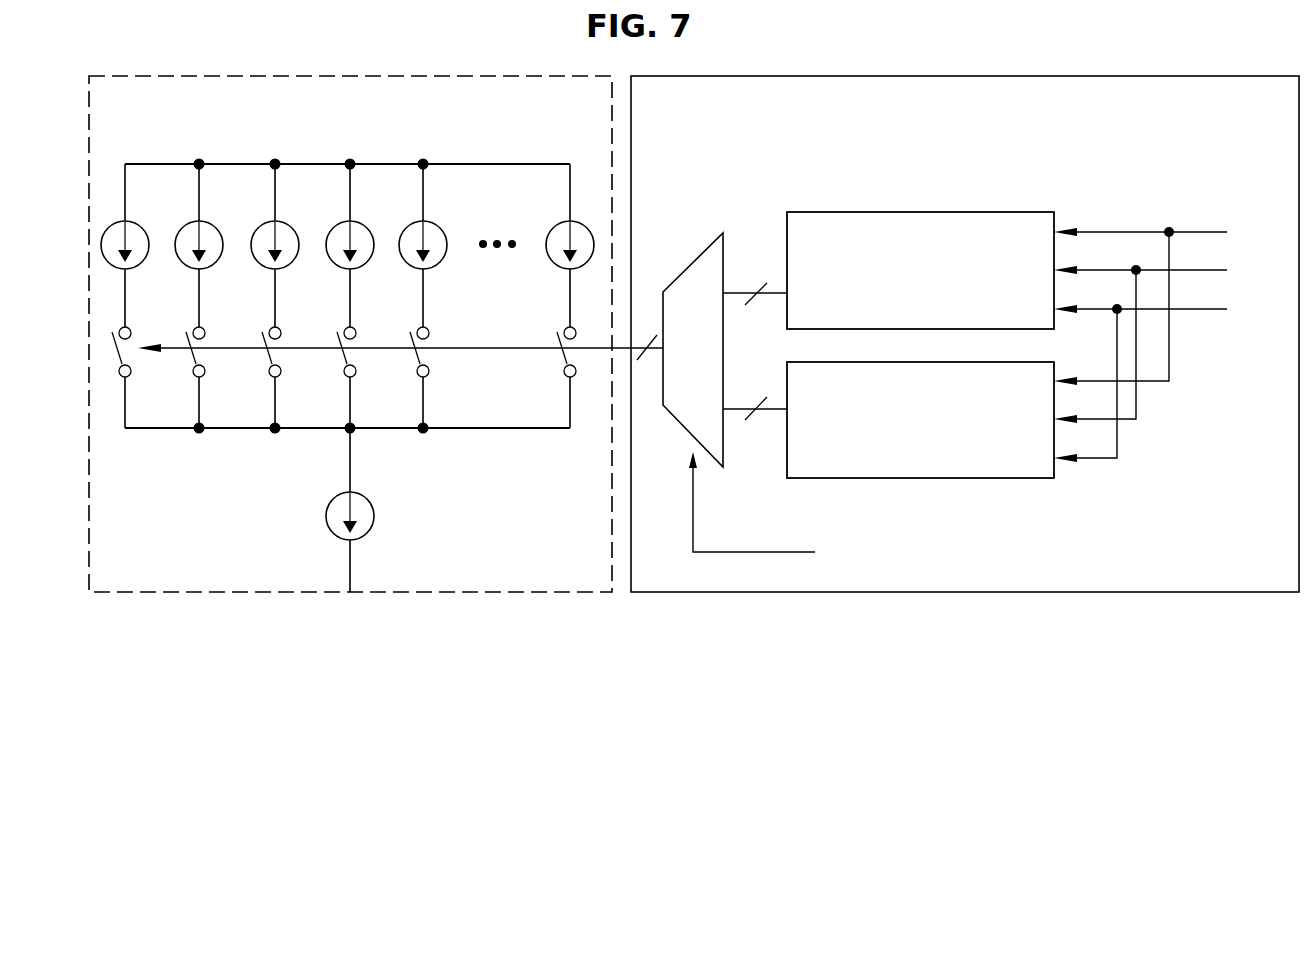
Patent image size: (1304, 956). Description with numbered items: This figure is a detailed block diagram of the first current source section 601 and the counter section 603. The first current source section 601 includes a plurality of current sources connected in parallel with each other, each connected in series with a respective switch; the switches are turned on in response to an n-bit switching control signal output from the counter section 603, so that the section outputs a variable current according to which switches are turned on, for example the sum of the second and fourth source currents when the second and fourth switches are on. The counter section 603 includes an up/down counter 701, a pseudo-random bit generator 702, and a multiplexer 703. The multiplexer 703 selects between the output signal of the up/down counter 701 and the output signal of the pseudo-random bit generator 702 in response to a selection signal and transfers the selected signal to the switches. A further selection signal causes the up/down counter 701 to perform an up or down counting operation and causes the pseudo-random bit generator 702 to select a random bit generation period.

The first current source section 601 is at (364, 593).
The counter section 603 is at (965, 357).
The up/down counter 701 is at (910, 212).
The pseudo-random bit generator 702 is at (950, 479).
The multiplexer 703 is at (695, 260).